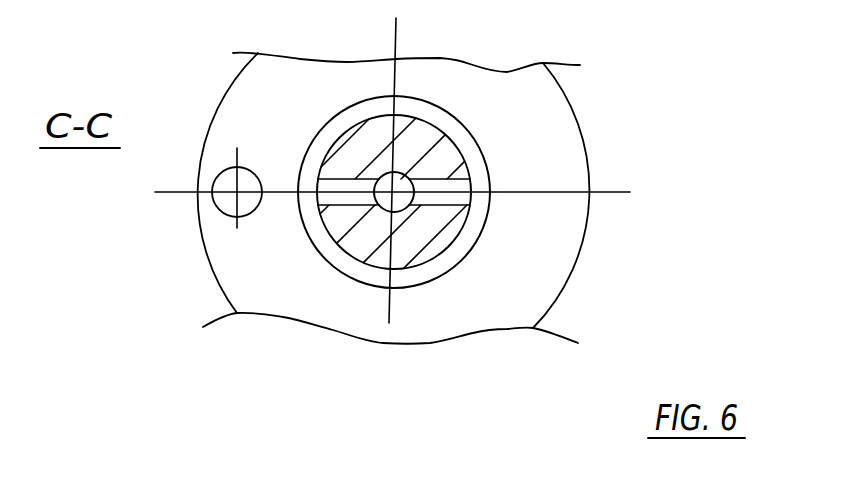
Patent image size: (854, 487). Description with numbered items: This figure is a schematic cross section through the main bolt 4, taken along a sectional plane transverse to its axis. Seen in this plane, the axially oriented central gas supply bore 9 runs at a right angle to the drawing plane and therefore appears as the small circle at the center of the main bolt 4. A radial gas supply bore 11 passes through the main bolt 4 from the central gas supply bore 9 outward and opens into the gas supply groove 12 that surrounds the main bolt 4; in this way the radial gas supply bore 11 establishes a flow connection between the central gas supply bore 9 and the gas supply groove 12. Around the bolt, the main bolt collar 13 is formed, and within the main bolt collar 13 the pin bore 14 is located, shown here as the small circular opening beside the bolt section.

The main bolt 4 is at (190, 52).
The central gas supply bore 9 is at (385, 202).
The radial gas supply bore 11 is at (423, 197).
The gas supply groove 12 is at (472, 157).
The main bolt collar 13 is at (557, 250).
The pin bore 14 is at (223, 203).